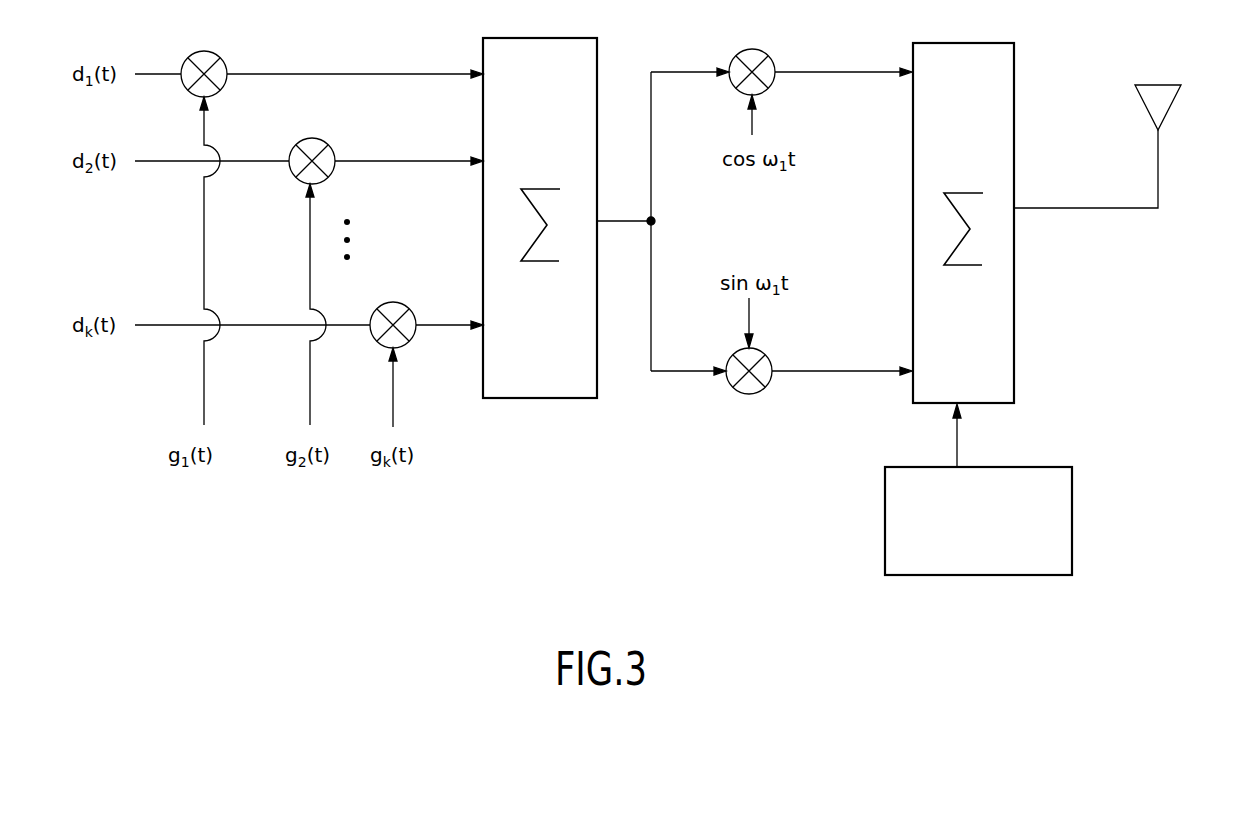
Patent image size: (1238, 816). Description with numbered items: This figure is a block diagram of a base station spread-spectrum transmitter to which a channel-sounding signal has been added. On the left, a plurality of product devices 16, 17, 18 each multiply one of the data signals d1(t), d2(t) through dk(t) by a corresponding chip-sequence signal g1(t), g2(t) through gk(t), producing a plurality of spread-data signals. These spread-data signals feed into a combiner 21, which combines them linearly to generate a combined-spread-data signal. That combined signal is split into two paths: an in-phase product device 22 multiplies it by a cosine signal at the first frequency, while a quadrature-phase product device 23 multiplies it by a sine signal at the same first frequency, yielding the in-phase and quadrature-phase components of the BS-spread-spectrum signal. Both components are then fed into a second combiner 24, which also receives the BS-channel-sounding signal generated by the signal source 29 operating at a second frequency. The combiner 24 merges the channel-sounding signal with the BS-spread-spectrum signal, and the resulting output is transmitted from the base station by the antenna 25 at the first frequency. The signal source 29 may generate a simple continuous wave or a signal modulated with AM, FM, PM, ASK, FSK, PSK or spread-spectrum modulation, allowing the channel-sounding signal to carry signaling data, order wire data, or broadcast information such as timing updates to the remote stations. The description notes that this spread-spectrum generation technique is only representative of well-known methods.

The product device 16 is at (208, 52).
The product device 17 is at (300, 140).
The product device 18 is at (386, 303).
The combiner 21 is at (532, 398).
The in-phase product device 22 is at (758, 50).
The quadrature-phase product device 23 is at (736, 392).
The combiner 24 is at (1014, 308).
The antenna 25 is at (1172, 103).
The signal source 29 is at (1072, 505).